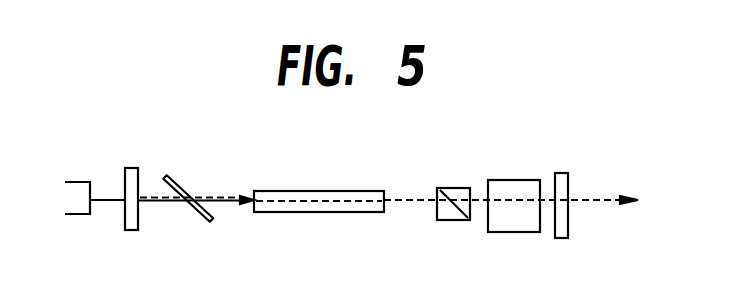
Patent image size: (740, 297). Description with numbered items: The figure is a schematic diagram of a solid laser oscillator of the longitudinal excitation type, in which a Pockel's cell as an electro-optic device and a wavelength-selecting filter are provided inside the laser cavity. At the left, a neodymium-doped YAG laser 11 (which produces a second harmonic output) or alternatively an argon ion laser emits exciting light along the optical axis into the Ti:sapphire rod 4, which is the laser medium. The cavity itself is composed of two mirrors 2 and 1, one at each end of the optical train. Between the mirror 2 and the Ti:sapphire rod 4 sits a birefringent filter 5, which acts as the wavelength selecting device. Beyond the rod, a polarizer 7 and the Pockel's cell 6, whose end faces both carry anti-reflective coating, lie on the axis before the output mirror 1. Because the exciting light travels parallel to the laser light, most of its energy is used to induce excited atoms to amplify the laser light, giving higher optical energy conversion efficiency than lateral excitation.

The neodymium-doped YAG laser 11 is at (67, 182).
The mirror 2 is at (128, 168).
The birefringent filter 5 is at (180, 183).
The Ti:sapphire rod 4 is at (355, 191).
The polarizer 7 is at (454, 188).
The Pockel's cell 6 is at (525, 180).
The mirror 1 is at (562, 173).